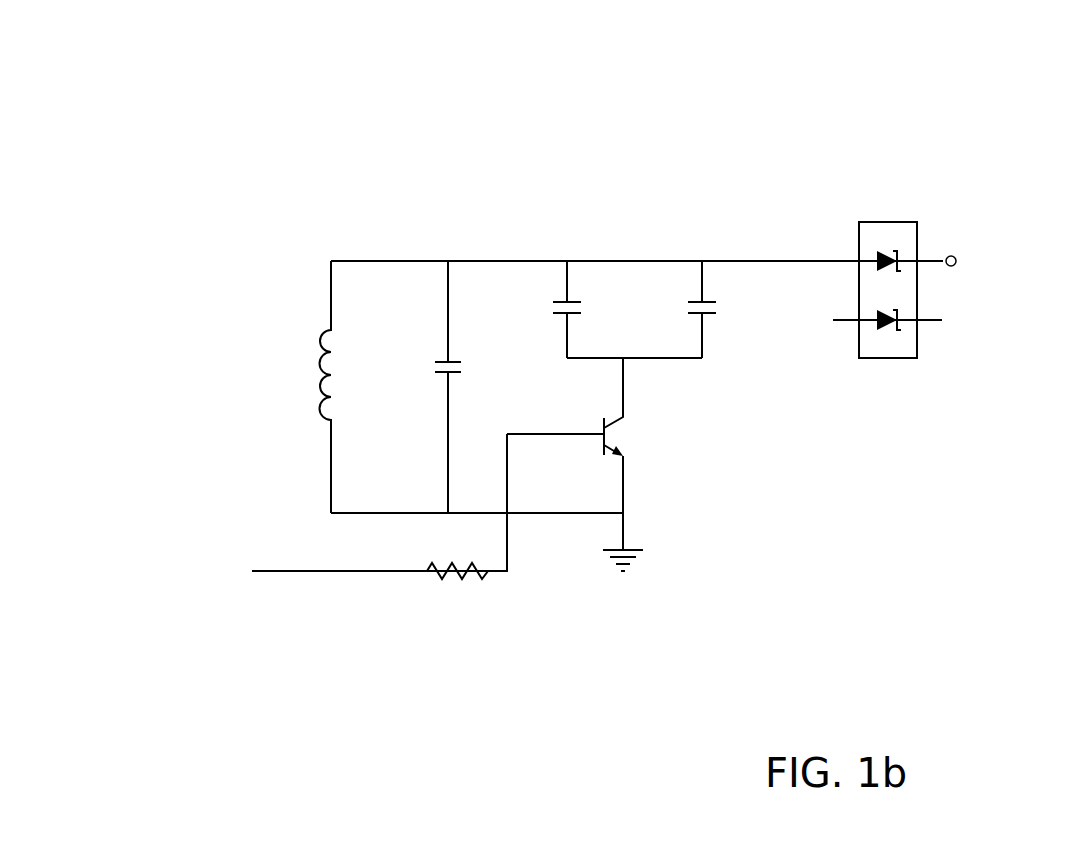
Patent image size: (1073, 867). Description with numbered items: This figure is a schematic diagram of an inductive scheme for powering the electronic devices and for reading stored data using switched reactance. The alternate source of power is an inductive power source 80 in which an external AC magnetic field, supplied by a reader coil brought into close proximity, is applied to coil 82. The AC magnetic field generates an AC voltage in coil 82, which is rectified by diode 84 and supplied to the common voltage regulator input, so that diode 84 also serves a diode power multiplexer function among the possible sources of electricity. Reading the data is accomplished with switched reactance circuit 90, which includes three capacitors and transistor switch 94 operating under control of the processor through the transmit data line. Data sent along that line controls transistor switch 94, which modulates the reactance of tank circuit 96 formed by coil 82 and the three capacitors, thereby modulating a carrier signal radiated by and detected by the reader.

The inductive power source 80 is at (661, 247).
The coil 82 is at (305, 288).
The diode 84 is at (935, 221).
The switched reactance circuit 90 is at (720, 406).
The transistor switch 94 is at (650, 470).
The tank circuit 96 is at (398, 312).